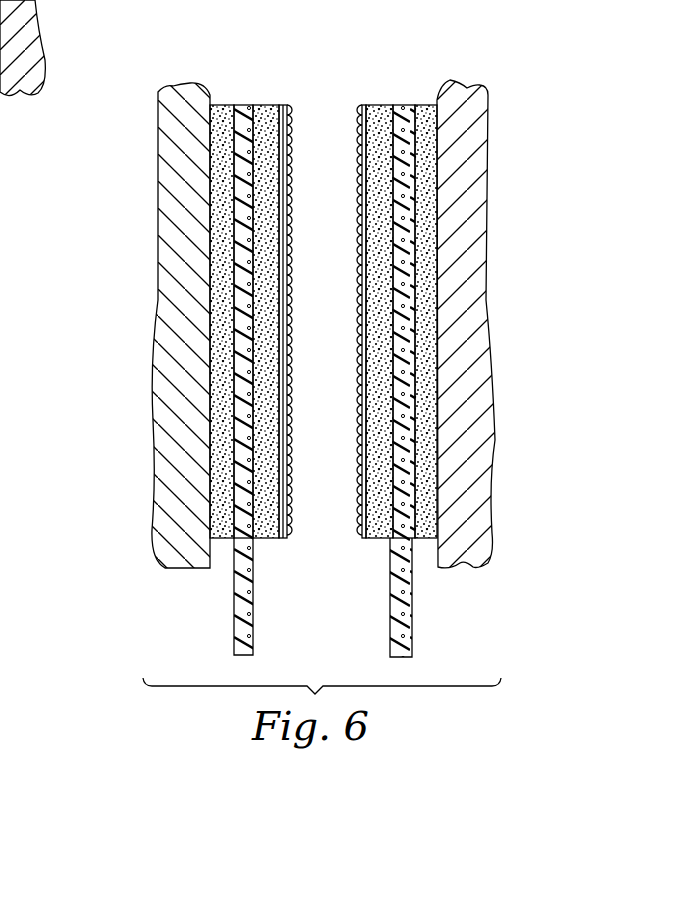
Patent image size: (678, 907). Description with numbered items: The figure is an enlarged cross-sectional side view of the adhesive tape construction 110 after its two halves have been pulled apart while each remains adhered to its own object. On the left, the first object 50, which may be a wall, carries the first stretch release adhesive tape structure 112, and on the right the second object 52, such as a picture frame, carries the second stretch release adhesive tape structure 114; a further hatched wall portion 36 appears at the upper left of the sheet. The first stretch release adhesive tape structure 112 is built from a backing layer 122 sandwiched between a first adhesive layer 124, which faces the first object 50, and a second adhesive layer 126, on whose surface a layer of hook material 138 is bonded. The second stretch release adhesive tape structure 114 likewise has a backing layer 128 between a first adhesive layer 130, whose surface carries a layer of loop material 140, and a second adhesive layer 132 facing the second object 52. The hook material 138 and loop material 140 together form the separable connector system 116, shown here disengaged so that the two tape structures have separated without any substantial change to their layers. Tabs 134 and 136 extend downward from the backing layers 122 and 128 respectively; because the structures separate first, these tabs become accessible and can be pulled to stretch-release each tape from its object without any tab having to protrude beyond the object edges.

The housing wall 36 is at (22, 68).
The first object 50 is at (158, 352).
The second object 52 is at (491, 366).
The adhesive tape construction 110 is at (101, 509).
The first stretch release adhesive tape structure 112 is at (236, 93).
The second stretch release adhesive tape structure 114 is at (413, 99).
The separable connector system 116 is at (349, 218).
The backing layer 122 is at (238, 182).
The first adhesive layer 124 is at (219, 153).
The second adhesive layer 126 is at (266, 105).
The backing layer 128 is at (412, 170).
The first adhesive layer 130 is at (383, 108).
The second adhesive layer 132 is at (432, 130).
The tab 134 is at (233, 598).
The tab 136 is at (408, 603).
The layer of hook material 138 is at (282, 542).
The layer of loop material 140 is at (362, 540).